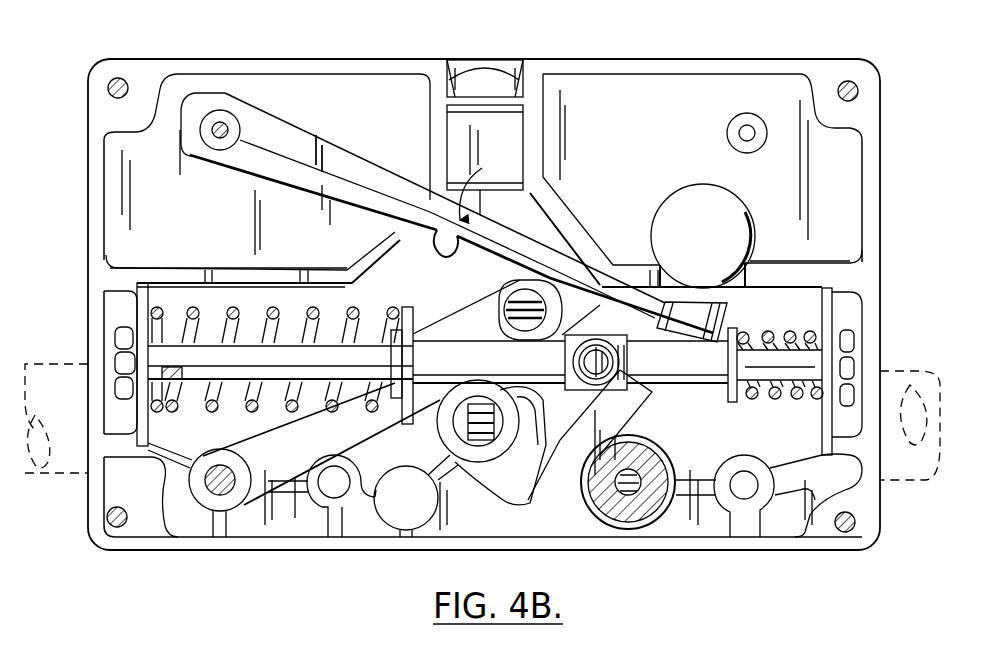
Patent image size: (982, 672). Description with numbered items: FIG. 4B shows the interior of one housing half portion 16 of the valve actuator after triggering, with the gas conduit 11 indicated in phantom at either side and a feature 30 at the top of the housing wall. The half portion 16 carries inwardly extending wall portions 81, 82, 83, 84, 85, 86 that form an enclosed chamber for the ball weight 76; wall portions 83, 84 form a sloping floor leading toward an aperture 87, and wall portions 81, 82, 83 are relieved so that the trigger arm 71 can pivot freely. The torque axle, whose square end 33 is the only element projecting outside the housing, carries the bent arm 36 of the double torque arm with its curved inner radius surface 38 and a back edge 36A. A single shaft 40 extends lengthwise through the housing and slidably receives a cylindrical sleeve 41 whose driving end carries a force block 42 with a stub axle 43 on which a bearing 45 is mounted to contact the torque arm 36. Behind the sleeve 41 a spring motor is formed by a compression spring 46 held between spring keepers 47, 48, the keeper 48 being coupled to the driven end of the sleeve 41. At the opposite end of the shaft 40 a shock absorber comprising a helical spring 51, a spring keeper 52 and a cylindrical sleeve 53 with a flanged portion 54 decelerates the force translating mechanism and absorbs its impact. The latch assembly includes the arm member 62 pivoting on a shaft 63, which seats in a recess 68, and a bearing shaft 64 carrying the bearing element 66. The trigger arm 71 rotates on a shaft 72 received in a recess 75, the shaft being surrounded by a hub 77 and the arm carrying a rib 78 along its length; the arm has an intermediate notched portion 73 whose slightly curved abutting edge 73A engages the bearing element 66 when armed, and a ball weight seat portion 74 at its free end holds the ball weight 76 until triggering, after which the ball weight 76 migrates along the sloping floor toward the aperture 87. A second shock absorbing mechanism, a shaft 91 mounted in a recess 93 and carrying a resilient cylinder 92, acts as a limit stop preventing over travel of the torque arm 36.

The gas conduit 11 is at (888, 376).
The half portion 16 is at (655, 56).
The vent 30 is at (495, 60).
The square end 33 is at (478, 440).
The bent arm 36 is at (540, 500).
The back edge 36A is at (622, 404).
The curved inner radius surface 38 is at (540, 400).
The shaft 40 is at (297, 370).
The cylindrical sleeve 41 is at (466, 370).
The force block 42 is at (627, 345).
The stub axle 43 is at (594, 380).
The bearing 45 is at (574, 352).
The compression spring 46 is at (152, 312).
The spring keeper 47 is at (137, 322).
The spring keeper 48 is at (406, 306).
The helical spring 51 is at (752, 400).
The spring keeper 52 is at (832, 316).
The cylindrical sleeve 53 is at (690, 370).
The flanged portion 54 is at (733, 402).
The arm member 62 is at (245, 500).
The shaft 63 is at (214, 490).
The bearing shaft 64 is at (512, 305).
The bearing element 66 is at (522, 290).
The recess 68 is at (748, 500).
The trigger arm 71 is at (340, 158).
The shaft 72 is at (218, 122).
The intermediate notched portion 73 is at (485, 183).
The abutting edge 73A is at (446, 260).
The ball weight seat portion 74 is at (728, 322).
The recess 75 is at (748, 125).
The ball weight 76 is at (712, 198).
The pivot boss 77 is at (226, 122).
The lever rib 78 is at (254, 141).
The wall portion 81 is at (525, 129).
The wall portion 82 is at (362, 254).
The wall portion 83 is at (312, 282).
The wall portion 84 is at (178, 268).
The wall portion 85 is at (88, 186).
The wall portion 86 is at (296, 58).
The aperture 87 is at (732, 287).
The shaft 91 is at (635, 496).
The resilient cylinder 92 is at (655, 520).
The recess 93 is at (330, 497).